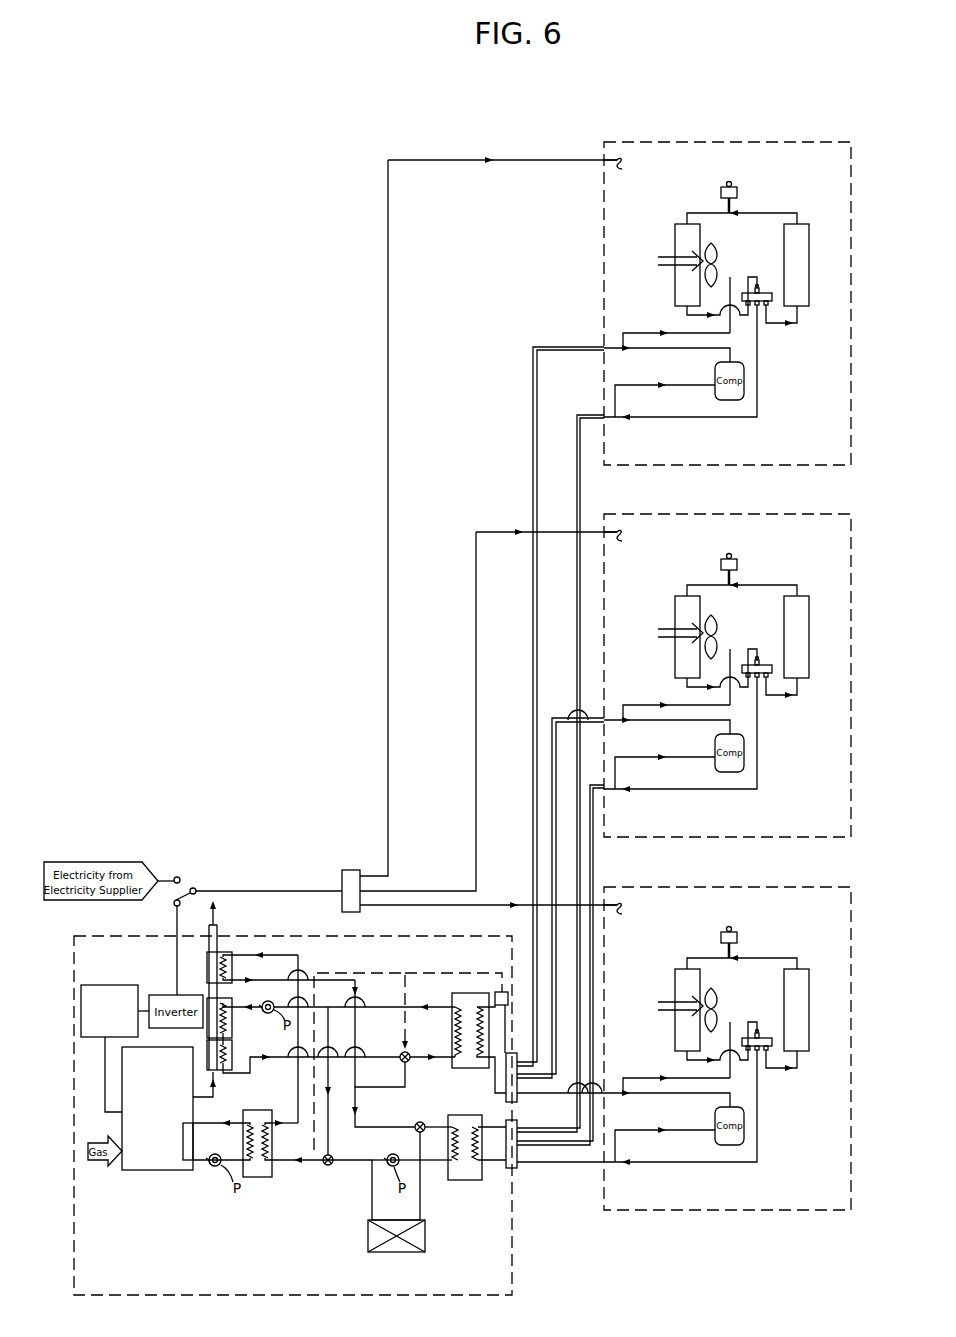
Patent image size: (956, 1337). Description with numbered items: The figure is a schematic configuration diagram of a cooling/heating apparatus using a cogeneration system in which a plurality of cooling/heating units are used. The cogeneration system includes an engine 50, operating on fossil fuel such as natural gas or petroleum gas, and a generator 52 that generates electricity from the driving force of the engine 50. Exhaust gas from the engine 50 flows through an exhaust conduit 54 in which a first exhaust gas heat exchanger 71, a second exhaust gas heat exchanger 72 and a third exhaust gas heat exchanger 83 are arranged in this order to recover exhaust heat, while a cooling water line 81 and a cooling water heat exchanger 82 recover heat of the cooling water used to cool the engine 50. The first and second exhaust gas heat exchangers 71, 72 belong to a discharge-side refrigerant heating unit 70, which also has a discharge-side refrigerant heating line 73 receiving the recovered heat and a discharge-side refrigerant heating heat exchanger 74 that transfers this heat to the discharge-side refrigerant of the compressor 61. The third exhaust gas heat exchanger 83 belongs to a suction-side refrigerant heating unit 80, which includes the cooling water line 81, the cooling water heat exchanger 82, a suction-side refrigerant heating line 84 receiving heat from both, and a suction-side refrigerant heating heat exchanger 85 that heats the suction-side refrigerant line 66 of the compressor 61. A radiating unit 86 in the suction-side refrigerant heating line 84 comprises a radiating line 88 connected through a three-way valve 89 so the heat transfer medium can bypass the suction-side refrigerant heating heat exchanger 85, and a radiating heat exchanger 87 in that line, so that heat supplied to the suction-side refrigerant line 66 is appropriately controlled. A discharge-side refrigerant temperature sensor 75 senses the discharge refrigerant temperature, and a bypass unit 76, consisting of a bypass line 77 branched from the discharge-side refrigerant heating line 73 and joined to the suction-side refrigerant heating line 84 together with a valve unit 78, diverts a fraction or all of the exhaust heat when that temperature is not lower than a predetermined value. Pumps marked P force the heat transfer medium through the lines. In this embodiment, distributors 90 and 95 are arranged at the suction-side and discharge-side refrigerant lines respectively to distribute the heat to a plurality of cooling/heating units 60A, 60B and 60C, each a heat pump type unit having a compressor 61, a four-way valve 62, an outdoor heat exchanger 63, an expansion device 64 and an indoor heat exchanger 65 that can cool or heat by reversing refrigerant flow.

The engine 50 is at (148, 1170).
The generator 52 is at (121, 989).
The exhaust conduit 54 is at (210, 990).
The cooling/heating unit 60A is at (768, 1190).
The cooling/heating unit 60B is at (760, 820).
The cooling/heating unit 60C is at (755, 445).
The compressor 61 is at (744, 392).
The 4-way valve 62 is at (768, 305).
The outdoor heat exchanger 63 is at (686, 226).
The expansion device 64 is at (737, 189).
The indoor heat exchanger 65 is at (800, 230).
The suction-side refrigerant line 66 is at (645, 1163).
The discharge-side refrigerant heating unit 70 is at (397, 1002).
The first exhaust gas heat exchanger 71 is at (232, 1046).
The second exhaust gas heat exchanger 72 is at (232, 1020).
The discharge-side refrigerant heating line 73 is at (266, 1001).
The discharge-side refrigerant heating heat exchanger 74 is at (470, 1068).
The discharge-side refrigerant temperature sensor 75 is at (508, 996).
The bypass unit 76 is at (418, 1106).
The bypass line 77 is at (331, 1106).
The valve unit 78 is at (410, 1062).
The suction-side refrigerant heating unit 80 is at (316, 1177).
The cooling water line 81 is at (213, 1167).
The cooling water heat exchanger 82 is at (262, 1178).
The third exhaust gas heat exchanger 83 is at (228, 956).
The suction-side refrigerant heating line 84 is at (318, 973).
The suction-side refrigerant heating heat exchanger 85 is at (470, 1181).
The radiating unit 86 is at (426, 1212).
The radiating heat exchanger 87 is at (410, 1247).
The radiating line 88 is at (422, 1196).
The 3-way valve 89 is at (414, 1132).
The distributor 90 is at (518, 1165).
The distributor 95 is at (511, 1051).